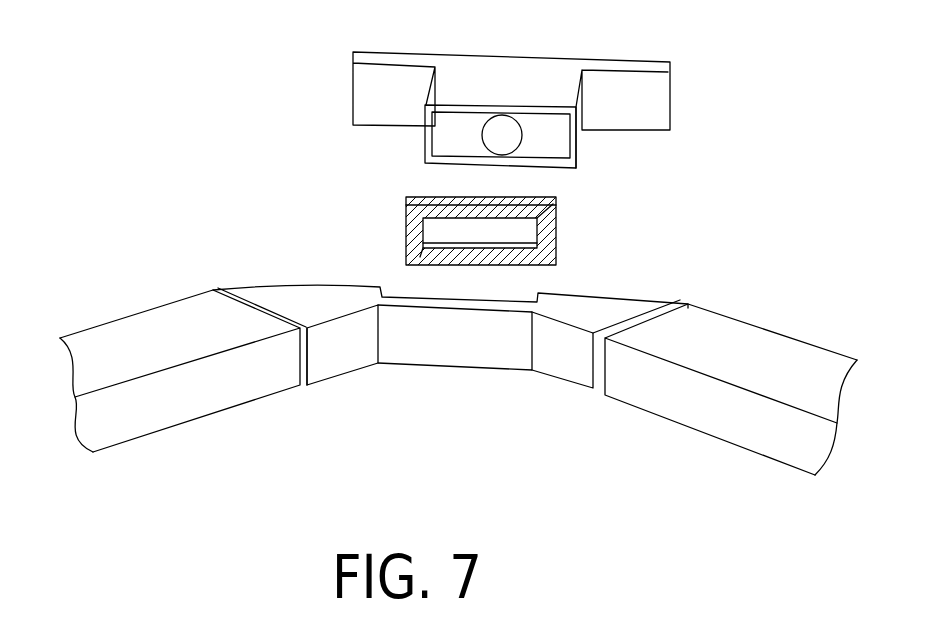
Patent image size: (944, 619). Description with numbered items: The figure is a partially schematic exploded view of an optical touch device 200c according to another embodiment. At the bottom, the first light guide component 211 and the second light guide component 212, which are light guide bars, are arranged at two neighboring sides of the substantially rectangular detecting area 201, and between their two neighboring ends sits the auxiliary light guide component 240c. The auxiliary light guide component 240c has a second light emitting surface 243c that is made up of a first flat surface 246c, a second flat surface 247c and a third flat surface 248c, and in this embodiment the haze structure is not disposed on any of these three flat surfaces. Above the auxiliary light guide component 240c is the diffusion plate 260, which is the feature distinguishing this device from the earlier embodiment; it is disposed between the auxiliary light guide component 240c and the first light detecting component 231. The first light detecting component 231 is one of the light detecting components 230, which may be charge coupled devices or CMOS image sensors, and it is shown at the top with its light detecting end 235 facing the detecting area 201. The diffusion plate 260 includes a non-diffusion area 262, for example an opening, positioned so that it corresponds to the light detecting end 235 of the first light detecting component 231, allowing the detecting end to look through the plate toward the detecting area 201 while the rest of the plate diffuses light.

The optical touch device 200c is at (458, 271).
The detecting area 201 is at (458, 373).
The first light guide component 211 is at (762, 342).
The second light guide component 212 is at (152, 325).
The light detecting components 230 is at (511, 88).
The first light detecting component 231 is at (501, 70).
The light detecting end 235 is at (484, 135).
The auxiliary light guide component 240c is at (290, 295).
The second light emitting surface 243c is at (451, 393).
The first flat surface 246c is at (561, 375).
The second flat surface 247c is at (343, 352).
The third flat surface 248c is at (455, 338).
The diffusion plate 260 is at (479, 231).
The non-diffusion area 262 is at (423, 228).